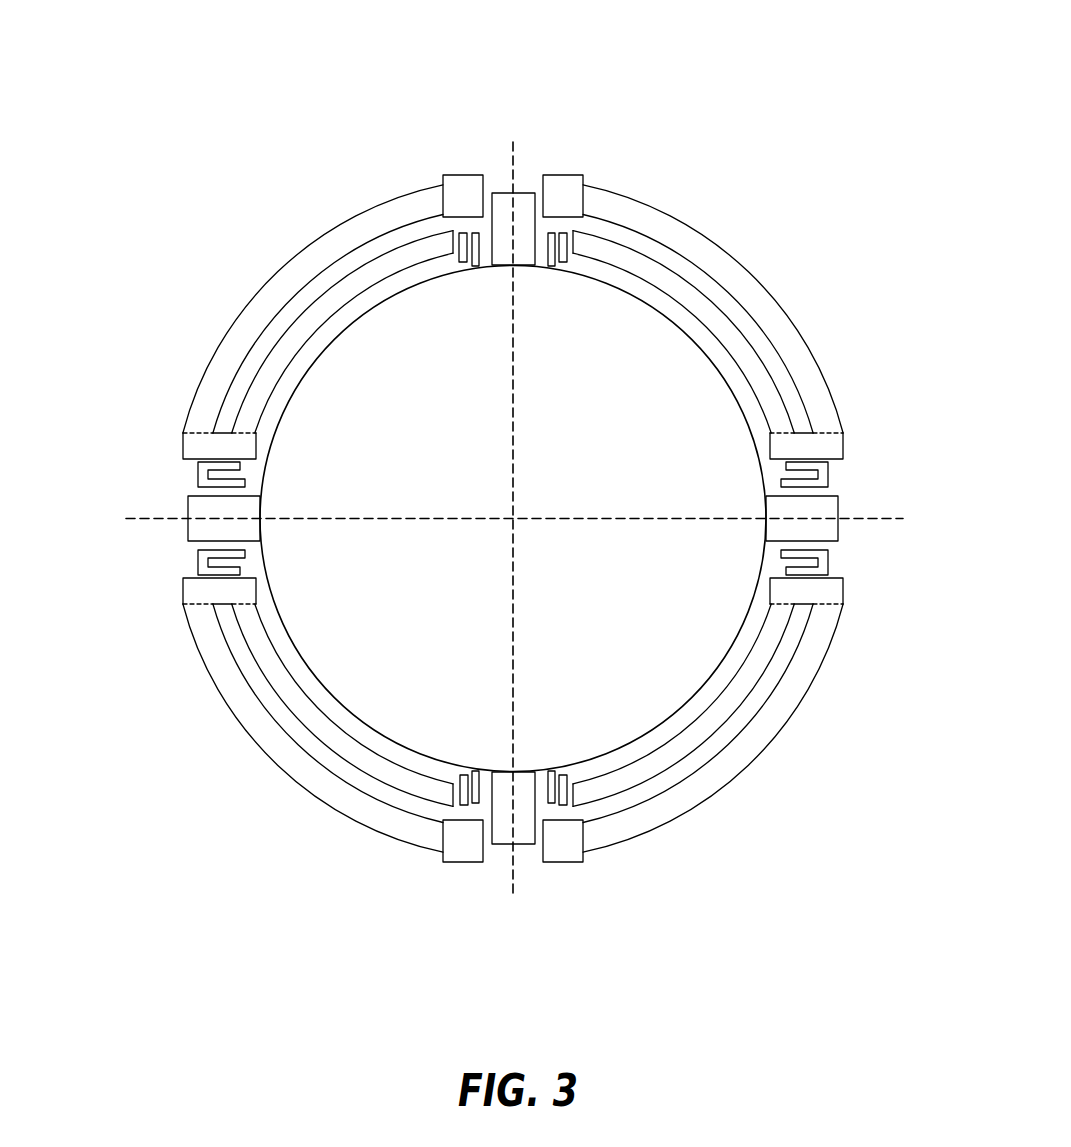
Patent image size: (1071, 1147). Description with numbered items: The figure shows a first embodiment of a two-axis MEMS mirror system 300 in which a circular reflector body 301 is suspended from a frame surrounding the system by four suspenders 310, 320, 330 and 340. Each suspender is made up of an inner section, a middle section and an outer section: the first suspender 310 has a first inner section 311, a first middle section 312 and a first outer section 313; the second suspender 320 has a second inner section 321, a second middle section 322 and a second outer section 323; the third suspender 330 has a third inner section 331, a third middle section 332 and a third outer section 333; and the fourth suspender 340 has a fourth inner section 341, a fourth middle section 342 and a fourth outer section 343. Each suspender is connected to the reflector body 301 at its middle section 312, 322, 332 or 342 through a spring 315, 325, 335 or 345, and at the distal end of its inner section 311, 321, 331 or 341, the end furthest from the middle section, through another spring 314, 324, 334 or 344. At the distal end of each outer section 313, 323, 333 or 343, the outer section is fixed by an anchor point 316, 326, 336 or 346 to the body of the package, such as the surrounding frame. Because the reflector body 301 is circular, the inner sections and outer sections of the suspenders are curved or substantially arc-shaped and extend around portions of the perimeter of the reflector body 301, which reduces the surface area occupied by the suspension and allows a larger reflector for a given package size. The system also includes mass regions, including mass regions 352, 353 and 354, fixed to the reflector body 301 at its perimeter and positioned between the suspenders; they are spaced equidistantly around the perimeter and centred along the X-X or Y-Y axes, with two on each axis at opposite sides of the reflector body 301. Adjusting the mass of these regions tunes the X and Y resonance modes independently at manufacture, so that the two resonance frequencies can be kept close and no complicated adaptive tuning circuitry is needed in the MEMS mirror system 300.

The two-axis MEMS mirror system 300 is at (512, 472).
The reflector body 301 is at (674, 825).
The first suspender 310 is at (756, 279).
The first inner section 311 is at (709, 332).
The first middle section 312 is at (870, 419).
The first outer section 313 is at (713, 300).
The spring 314 is at (596, 300).
The spring 315 is at (723, 433).
The anchor point 316 is at (589, 144).
The second suspender 320 is at (756, 761).
The second inner section 321 is at (709, 705).
The second middle section 322 is at (870, 617).
The second outer section 323 is at (713, 740).
The spring 324 is at (611, 721).
The spring 325 is at (746, 590).
The anchor point 326 is at (591, 896).
The third suspender 330 is at (271, 762).
The third inner section 331 is at (318, 705).
The third middle section 332 is at (158, 617).
The third outer section 333 is at (313, 740).
The spring 334 is at (431, 738).
The spring 335 is at (305, 604).
The anchor point 336 is at (437, 897).
The fourth suspender 340 is at (271, 279).
The fourth inner section 341 is at (318, 332).
The fourth middle section 342 is at (158, 419).
The fourth outer section 343 is at (313, 298).
The spring 344 is at (417, 319).
The spring 345 is at (282, 447).
The anchor point 346 is at (437, 144).
The mass region 352 is at (636, 367).
The mass region 353 is at (534, 750).
The mass region 354 is at (293, 546).